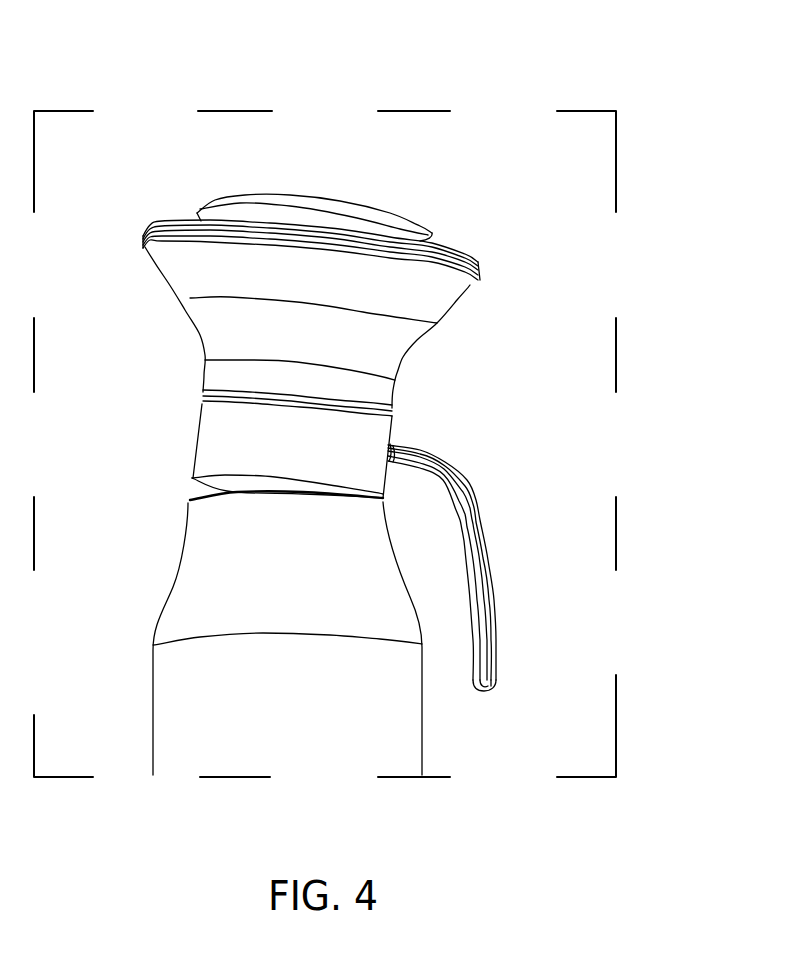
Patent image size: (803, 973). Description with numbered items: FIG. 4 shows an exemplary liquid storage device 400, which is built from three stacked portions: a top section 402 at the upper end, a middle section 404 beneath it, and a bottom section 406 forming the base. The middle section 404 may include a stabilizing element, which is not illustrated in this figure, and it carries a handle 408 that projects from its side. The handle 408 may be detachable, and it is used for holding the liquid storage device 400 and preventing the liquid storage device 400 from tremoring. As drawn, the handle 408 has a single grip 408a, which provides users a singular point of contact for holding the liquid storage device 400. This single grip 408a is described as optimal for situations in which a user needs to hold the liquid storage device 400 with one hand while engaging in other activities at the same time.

The liquid storage device 400 is at (569, 60).
The top section 402 is at (190, 283).
The middle section 404 is at (210, 443).
The bottom section 406 is at (173, 681).
The handle 408 is at (463, 545).
The single grip 408a is at (473, 497).